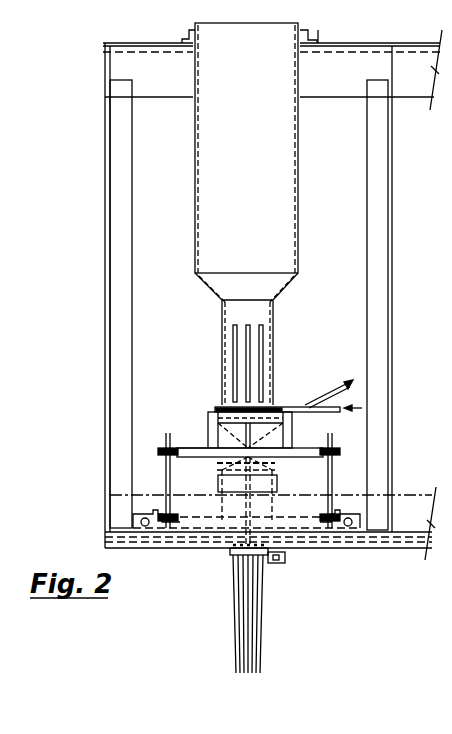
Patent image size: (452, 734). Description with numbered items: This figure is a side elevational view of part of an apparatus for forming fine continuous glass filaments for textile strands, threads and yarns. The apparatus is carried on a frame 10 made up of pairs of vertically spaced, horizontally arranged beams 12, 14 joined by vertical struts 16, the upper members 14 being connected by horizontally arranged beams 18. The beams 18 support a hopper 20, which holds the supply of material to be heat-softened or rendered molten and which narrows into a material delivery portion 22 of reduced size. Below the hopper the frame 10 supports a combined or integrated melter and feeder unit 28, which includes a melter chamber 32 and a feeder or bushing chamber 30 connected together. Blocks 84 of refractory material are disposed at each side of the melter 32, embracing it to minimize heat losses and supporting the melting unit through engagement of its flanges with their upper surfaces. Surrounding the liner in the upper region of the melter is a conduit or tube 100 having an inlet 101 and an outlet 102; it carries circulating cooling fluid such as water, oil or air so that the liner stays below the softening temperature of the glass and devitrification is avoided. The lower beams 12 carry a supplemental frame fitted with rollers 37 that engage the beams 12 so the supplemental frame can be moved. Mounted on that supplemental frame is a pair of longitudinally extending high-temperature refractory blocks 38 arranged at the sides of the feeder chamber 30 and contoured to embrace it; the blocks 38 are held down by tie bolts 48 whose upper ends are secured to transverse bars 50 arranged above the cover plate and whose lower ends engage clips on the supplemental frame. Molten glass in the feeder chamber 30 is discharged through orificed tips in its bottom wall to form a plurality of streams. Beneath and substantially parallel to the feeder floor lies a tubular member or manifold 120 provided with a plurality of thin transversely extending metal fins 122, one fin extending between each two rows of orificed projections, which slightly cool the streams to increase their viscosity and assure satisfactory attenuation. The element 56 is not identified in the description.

The frame 10 is at (401, 199).
The lower beams 12 is at (404, 495).
The upper beams 14 is at (361, 46).
The vertical struts 16 is at (105, 134).
The beams 18 is at (182, 39).
The hopper 20 is at (298, 139).
The material delivery portion 22 is at (275, 309).
The melter and feeder unit 28 is at (302, 441).
The feeder chamber 30 is at (227, 517).
The melter chamber 32 is at (274, 438).
The rollers 37 is at (150, 512).
The blocks 38 is at (305, 482).
The tie bolts 48 is at (168, 435).
The transverse bars 50 is at (193, 447).
The wires 56 is at (238, 607).
The blocks 84 is at (207, 412).
The conduit 100 is at (283, 406).
The inlet 101 is at (335, 403).
The outlet 102 is at (325, 395).
The manifold 120 is at (285, 558).
The fins 122 is at (232, 556).